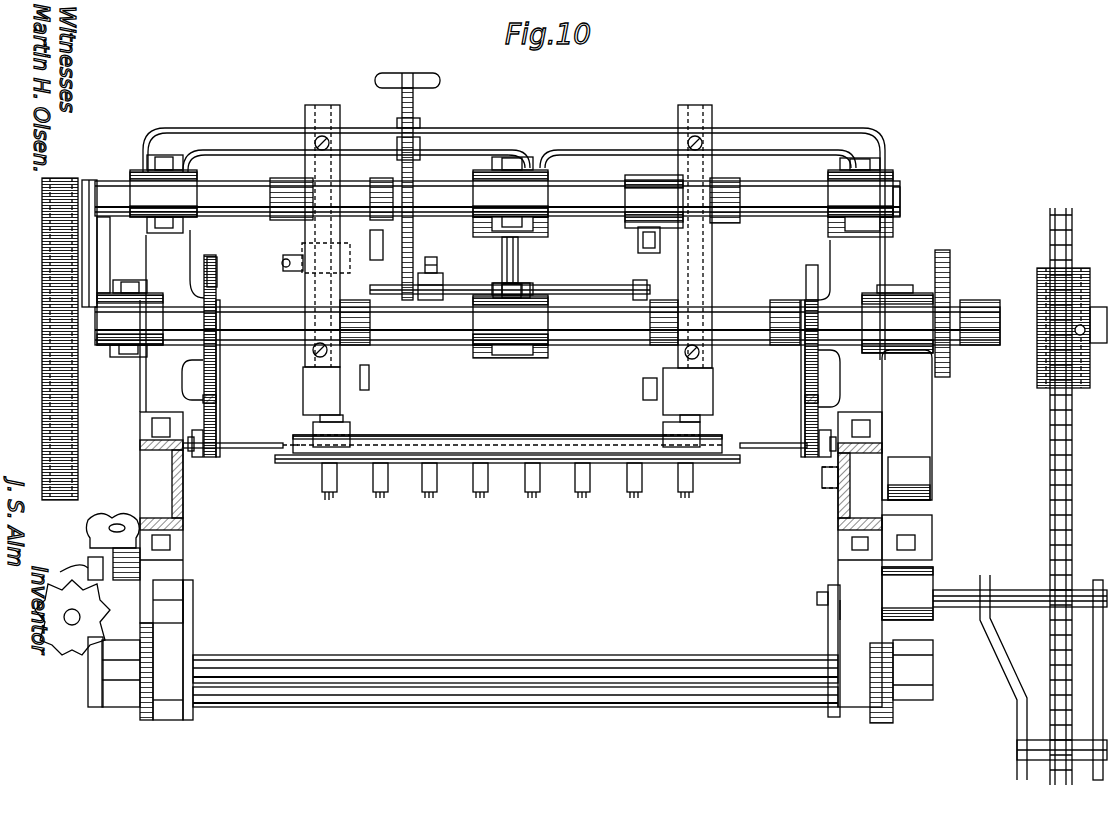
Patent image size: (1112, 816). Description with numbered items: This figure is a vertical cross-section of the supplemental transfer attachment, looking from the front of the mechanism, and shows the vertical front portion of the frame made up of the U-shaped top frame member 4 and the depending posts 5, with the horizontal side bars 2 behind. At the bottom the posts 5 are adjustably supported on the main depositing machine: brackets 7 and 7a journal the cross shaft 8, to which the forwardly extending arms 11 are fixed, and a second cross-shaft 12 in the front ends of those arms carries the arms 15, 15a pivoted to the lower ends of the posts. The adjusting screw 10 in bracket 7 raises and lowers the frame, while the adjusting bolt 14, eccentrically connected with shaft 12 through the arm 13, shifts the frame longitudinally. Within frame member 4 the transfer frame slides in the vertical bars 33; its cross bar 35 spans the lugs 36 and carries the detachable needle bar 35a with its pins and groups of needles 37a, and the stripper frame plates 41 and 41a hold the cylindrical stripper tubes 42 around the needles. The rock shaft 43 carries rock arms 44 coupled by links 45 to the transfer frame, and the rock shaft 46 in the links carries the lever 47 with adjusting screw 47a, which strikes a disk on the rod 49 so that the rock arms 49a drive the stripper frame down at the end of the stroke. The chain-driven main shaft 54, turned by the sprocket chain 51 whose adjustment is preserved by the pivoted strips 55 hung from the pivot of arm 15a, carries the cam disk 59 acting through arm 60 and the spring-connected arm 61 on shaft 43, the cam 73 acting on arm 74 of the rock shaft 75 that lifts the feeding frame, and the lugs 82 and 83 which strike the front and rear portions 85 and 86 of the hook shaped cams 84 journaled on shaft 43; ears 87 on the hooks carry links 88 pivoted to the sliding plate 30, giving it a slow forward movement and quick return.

The longitudinal side bars 2 is at (838, 522).
The U-shaped top frame member 4 is at (880, 142).
The depending posts 5 is at (170, 568).
The bracket 7 is at (88, 565).
The bracket 7a is at (915, 638).
The cross shaft 8 is at (300, 658).
The adjusting screw 10 is at (117, 524).
The forwardly extending arms 11 is at (148, 640).
The second cross-shaft 12 is at (330, 705).
The arm 13 is at (98, 662).
The adjusting bolt 14 is at (70, 620).
The arm 15 is at (193, 636).
The arm 15a is at (830, 633).
The sliding plate 30 is at (235, 450).
The vertical bars 33 is at (322, 105).
The cross bar 35 is at (525, 440).
The needle bar 35a is at (568, 447).
The lugs 36 is at (320, 405).
The needles 37a is at (532, 492).
The bottom cross plate 41 is at (275, 458).
The bottom cross plate 41a is at (300, 463).
The stripper tubes 42 is at (372, 488).
The rock shaft 43 is at (592, 192).
The rock arms 44 is at (383, 252).
The links 45 is at (369, 378).
The rock shaft 46 is at (560, 285).
The arm or lever 47 is at (443, 278).
The adjusting screw 47a is at (432, 258).
The rod 49 is at (413, 232).
The rock arms 49a is at (660, 312).
The sprocket chain 51 is at (1072, 528).
The main shaft 54 is at (592, 296).
The connected strips 55 is at (1005, 660).
The cam disk 59 is at (50, 257).
The arm 60 is at (88, 232).
The arm 61 is at (103, 280).
The cam 73 is at (950, 276).
The arm 74 is at (932, 428).
The rock shaft 75 is at (824, 488).
The lugs 82 is at (216, 362).
The lugs 83 is at (200, 306).
The hook shaped cams 84 is at (216, 399).
The front portion of hook 85 is at (189, 384).
The rear portion of hook 86 is at (217, 270).
The ears 87 is at (218, 428).
The links 88 is at (197, 458).